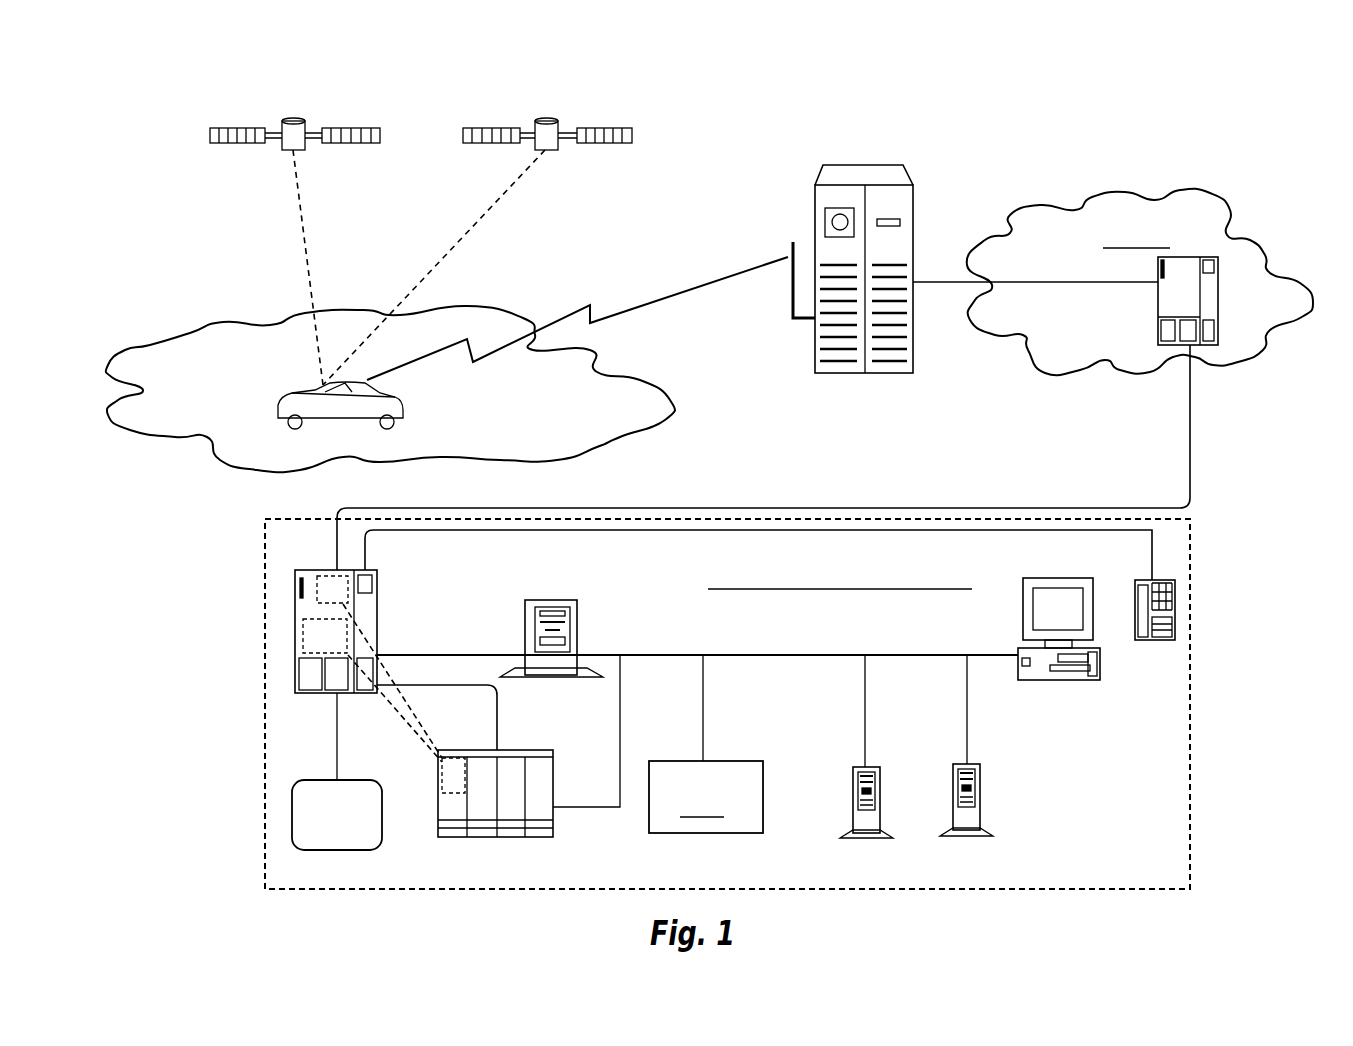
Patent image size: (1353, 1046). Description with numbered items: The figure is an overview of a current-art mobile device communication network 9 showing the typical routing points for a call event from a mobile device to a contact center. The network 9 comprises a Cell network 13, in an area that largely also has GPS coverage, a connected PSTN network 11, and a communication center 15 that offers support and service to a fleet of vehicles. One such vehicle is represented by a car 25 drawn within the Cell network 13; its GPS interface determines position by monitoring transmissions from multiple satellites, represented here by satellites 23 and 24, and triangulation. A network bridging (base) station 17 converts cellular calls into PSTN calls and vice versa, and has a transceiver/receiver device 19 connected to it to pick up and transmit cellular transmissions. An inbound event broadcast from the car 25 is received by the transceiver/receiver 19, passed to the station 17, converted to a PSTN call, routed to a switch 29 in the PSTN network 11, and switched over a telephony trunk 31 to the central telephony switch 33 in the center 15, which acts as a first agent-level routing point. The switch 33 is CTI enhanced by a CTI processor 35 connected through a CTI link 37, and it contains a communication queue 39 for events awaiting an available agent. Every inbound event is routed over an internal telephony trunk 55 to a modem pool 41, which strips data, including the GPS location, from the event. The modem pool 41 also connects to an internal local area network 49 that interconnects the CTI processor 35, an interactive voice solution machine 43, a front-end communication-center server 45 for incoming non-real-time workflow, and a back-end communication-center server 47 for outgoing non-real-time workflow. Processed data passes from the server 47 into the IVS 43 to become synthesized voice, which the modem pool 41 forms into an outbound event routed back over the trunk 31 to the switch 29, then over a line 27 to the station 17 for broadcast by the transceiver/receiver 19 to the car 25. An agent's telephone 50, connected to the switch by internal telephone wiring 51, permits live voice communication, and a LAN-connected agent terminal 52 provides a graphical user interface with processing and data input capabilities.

The mobile device communication network 9 is at (158, 493).
The PSTN network 11 is at (1143, 195).
The Cell network 13 is at (278, 322).
The communication center 15 is at (1190, 663).
The network bridging (base) station 17 is at (863, 164).
The transceiver/receiver device 19 is at (803, 320).
The satellite 23 is at (294, 119).
The satellite 24 is at (548, 119).
The car 25 is at (280, 418).
The line 27 is at (1078, 283).
The switch 29 is at (1158, 295).
The telephony trunk 31 is at (887, 508).
The central telephony switch 33 is at (295, 630).
The CTI processor 35 is at (525, 628).
The CTI link 37 is at (445, 653).
The communication queue 39 is at (292, 815).
The modem pool 41 is at (553, 782).
The interactive voice solution (IVS) machine 43 is at (763, 785).
The front-end communication-center server (CCS FE) 45 is at (953, 800).
The back-end communication-center server (CCS BE) 47 is at (853, 790).
The local area network (LAN) 49 is at (755, 655).
The agent's telephone 50 is at (1163, 572).
The internal telephone wiring 51 is at (700, 533).
The terminal 52 is at (1063, 578).
The internal telephony trunk 55 is at (497, 735).